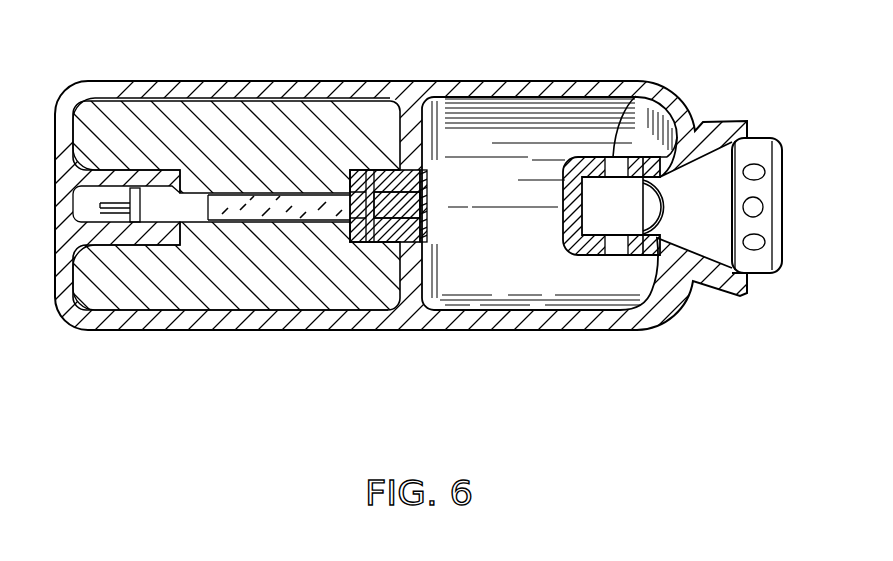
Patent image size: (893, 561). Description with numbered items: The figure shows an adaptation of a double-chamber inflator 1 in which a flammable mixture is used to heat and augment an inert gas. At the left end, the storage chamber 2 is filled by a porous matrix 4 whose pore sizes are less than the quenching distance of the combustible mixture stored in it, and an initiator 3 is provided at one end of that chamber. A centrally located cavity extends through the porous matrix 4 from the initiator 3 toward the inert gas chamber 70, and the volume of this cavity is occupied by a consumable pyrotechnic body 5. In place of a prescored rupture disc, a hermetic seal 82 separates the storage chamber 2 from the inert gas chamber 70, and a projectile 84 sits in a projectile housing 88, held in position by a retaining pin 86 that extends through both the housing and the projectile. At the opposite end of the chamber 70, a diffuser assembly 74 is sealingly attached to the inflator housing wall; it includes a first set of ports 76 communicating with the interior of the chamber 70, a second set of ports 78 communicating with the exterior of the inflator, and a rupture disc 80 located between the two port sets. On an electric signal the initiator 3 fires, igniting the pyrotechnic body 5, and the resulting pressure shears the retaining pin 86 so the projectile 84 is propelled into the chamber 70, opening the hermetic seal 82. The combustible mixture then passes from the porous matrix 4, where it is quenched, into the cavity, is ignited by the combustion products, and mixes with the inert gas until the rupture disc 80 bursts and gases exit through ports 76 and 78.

The inflator 1 is at (352, 62).
The storage chamber 2 is at (257, 98).
The initiator 3 is at (153, 208).
The porous matrix 4 is at (183, 99).
The consumable pyrotechnic body 5 is at (247, 205).
The inert gas chamber 70 is at (547, 277).
The diffuser assembly 74 is at (588, 247).
The first set of ports 76 is at (645, 157).
The second set of ports 78 is at (760, 252).
The rupture disc 80 is at (664, 214).
The hermetic seal 82 is at (432, 212).
The projectile 84 is at (425, 158).
The retaining pin 86 is at (426, 260).
The projectile housing 88 is at (426, 205).